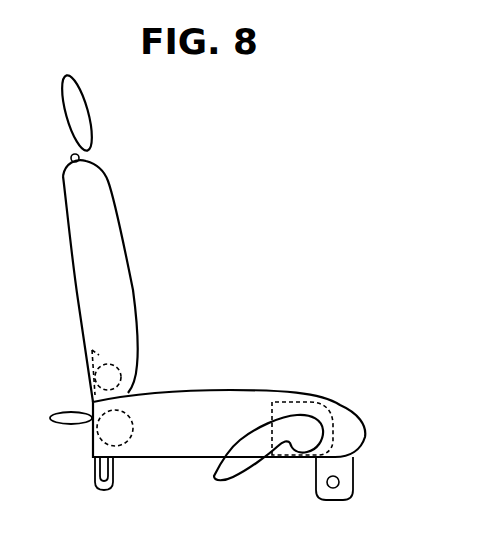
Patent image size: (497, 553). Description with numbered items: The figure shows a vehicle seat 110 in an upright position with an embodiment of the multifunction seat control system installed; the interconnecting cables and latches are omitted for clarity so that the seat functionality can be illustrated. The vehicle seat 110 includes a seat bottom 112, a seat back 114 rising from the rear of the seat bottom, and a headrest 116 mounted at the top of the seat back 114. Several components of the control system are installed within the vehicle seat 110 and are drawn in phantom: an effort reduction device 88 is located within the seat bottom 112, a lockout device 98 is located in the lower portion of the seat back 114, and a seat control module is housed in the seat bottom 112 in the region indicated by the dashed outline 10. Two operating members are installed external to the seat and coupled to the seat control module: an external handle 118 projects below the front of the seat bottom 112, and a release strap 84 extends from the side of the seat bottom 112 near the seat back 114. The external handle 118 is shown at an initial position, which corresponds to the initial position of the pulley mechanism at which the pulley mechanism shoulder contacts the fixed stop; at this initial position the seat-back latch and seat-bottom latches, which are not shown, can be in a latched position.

The seat occupant sensing device 10 is at (280, 400).
The release strap 84 is at (70, 424).
The effort reduction device 88 is at (133, 424).
The lockout device 98 is at (118, 363).
The vehicle seat 110 is at (350, 200).
The seat bottom 112 is at (363, 432).
The seat back 114 is at (121, 212).
The headrest 116 is at (90, 123).
The external handle 118 is at (228, 476).